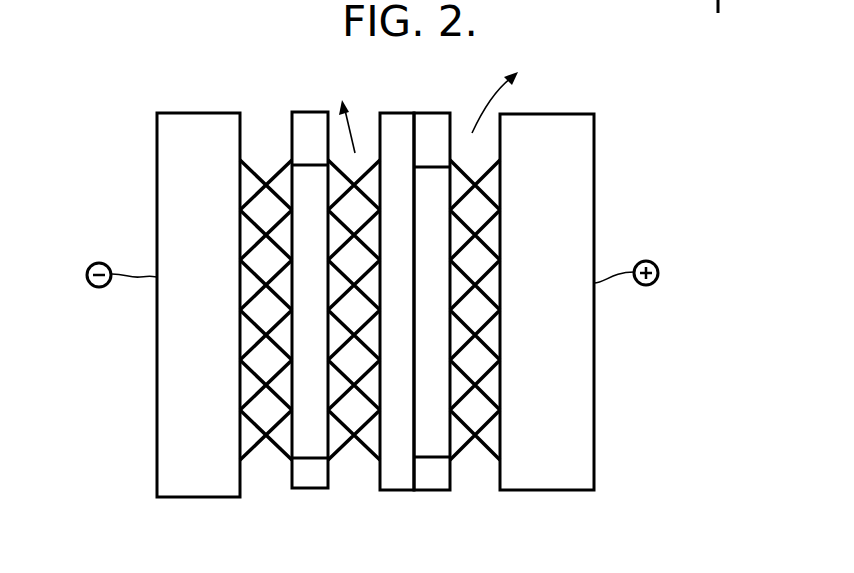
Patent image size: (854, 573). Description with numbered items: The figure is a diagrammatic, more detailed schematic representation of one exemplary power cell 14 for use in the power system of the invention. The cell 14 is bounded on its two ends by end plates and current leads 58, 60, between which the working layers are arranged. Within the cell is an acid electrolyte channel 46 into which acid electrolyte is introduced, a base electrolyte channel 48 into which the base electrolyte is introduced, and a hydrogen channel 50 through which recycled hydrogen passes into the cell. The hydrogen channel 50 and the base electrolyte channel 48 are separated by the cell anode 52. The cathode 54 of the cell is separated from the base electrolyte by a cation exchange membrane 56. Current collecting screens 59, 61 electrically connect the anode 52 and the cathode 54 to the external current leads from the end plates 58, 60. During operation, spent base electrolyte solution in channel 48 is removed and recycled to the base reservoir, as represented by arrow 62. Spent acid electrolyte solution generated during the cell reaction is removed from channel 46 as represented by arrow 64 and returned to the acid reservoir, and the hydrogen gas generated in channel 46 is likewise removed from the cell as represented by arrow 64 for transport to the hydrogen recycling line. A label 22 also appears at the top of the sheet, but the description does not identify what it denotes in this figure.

The cell 14 is at (594, 86).
The cell unit 22 is at (237, 12).
The acid electrolyte channel 46 is at (486, 458).
The base electrolyte channel 48 is at (352, 441).
The hydrogen channel 50 is at (273, 458).
The cell anode 52 is at (308, 184).
The cathode 54 is at (432, 207).
The cation exchange membrane 56 is at (393, 150).
The end plate and current lead 58 is at (183, 321).
The current collecting screen 59 is at (252, 378).
The end plate and current lead 60 is at (566, 327).
The current collecting screen 61 is at (482, 378).
The arrow 62 is at (350, 137).
The arrow 64 is at (503, 99).